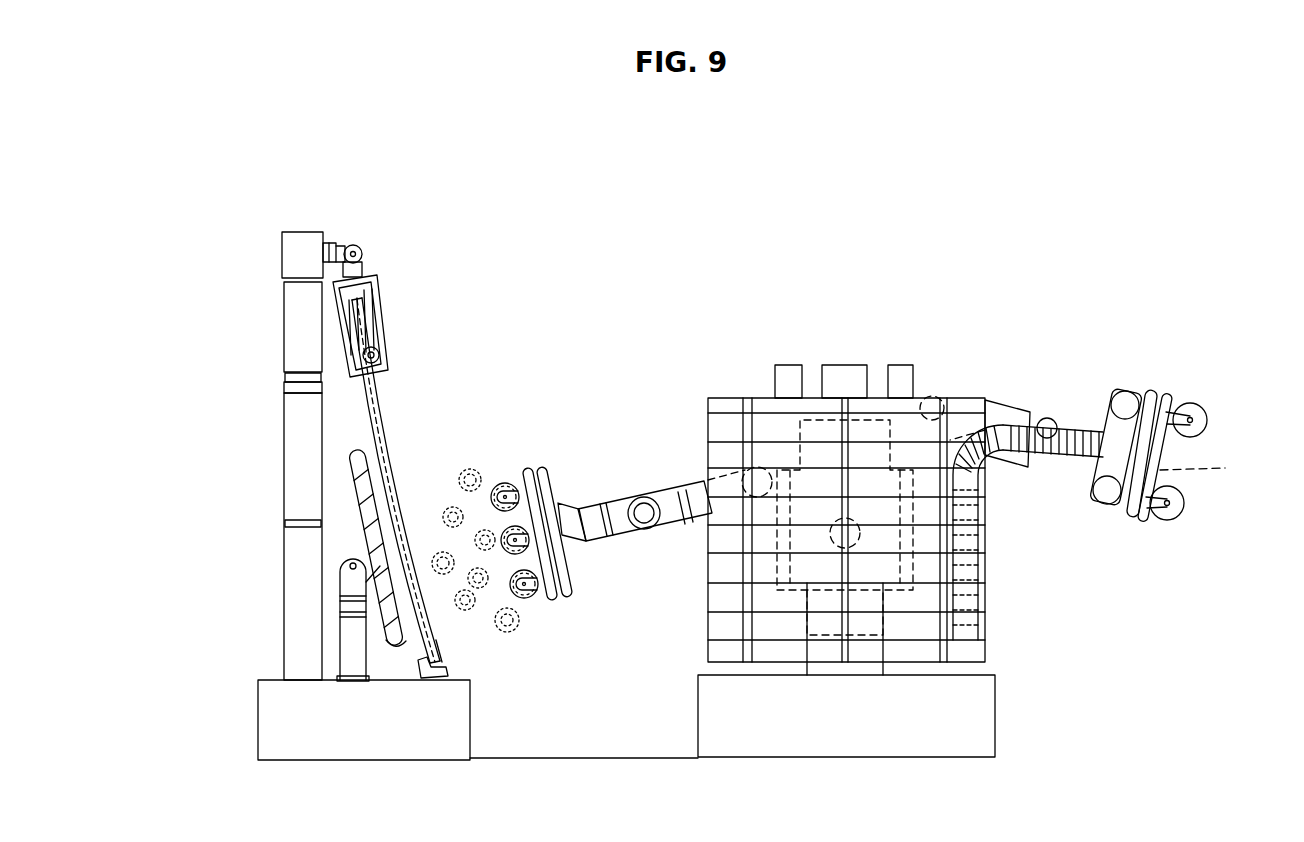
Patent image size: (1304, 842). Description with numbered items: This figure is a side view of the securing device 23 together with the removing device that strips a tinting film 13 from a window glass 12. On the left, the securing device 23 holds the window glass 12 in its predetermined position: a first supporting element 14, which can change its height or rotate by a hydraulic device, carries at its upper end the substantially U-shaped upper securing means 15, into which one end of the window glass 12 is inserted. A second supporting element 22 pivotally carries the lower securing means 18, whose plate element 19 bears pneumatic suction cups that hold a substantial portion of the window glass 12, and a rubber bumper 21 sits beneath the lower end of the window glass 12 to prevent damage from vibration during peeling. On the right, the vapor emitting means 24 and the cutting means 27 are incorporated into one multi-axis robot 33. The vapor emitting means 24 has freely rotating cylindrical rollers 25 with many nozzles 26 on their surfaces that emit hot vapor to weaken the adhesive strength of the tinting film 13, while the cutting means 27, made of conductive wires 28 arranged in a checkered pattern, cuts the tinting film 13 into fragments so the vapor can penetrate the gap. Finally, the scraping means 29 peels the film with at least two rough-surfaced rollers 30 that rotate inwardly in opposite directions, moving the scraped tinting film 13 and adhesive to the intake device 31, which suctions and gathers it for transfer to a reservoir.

The window glass 12 is at (370, 417).
The tinting film 13 is at (462, 658).
The first supporting element 14 is at (300, 328).
The upper securing means 15 is at (398, 290).
The lower securing means 18 is at (354, 494).
The plate element 19 is at (395, 655).
The bumper 21 is at (430, 680).
The second supporting element 22 is at (347, 642).
The securing device 23 is at (452, 404).
The vapor emitting means 24 is at (582, 490).
The cylindrical roller 25 is at (516, 463).
The nozzles 26 is at (538, 600).
The cutting means 27 is at (996, 626).
The conductive wires 28 is at (740, 410).
The scraping means 29 is at (1086, 406).
The rollers 30 is at (1163, 522).
The intake device 31 is at (1182, 468).
The multi-axis robot 33 is at (848, 356).